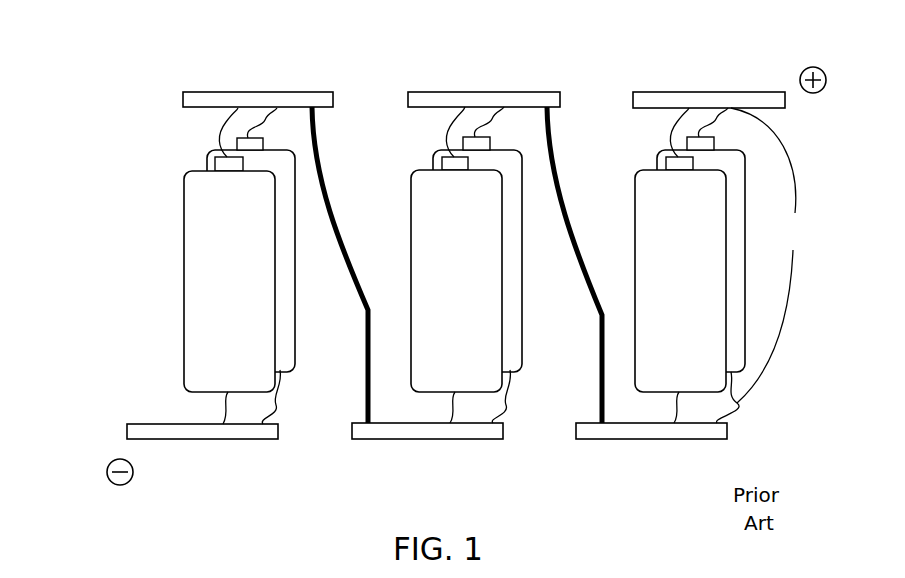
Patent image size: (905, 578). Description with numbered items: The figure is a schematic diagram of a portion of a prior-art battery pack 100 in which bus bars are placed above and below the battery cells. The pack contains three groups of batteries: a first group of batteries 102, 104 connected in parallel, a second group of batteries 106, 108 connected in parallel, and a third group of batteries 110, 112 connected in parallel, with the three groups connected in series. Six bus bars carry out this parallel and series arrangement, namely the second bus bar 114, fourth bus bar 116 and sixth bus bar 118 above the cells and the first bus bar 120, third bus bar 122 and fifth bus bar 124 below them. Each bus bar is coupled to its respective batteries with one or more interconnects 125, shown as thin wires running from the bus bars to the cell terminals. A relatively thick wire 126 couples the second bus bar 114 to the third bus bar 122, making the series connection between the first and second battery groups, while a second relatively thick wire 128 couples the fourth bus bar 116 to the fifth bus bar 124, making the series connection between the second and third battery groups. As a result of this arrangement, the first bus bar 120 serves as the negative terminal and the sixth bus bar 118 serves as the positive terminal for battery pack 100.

The battery pack 100 is at (122, 84).
The battery 102 is at (184, 240).
The battery 104 is at (206, 160).
The battery 106 is at (411, 258).
The battery 108 is at (434, 158).
The battery 110 is at (636, 233).
The battery 112 is at (658, 161).
The second bus bar 114 is at (200, 92).
The fourth bus bar 116 is at (435, 92).
The sixth bus bar 118 is at (661, 92).
The first bus bar 120 is at (247, 441).
The third bus bar 122 is at (450, 441).
The fifth bus bar 124 is at (687, 441).
The interconnect 125 is at (772, 255).
The relatively thick wire 126 is at (364, 314).
The second relatively thick wire 128 is at (599, 328).